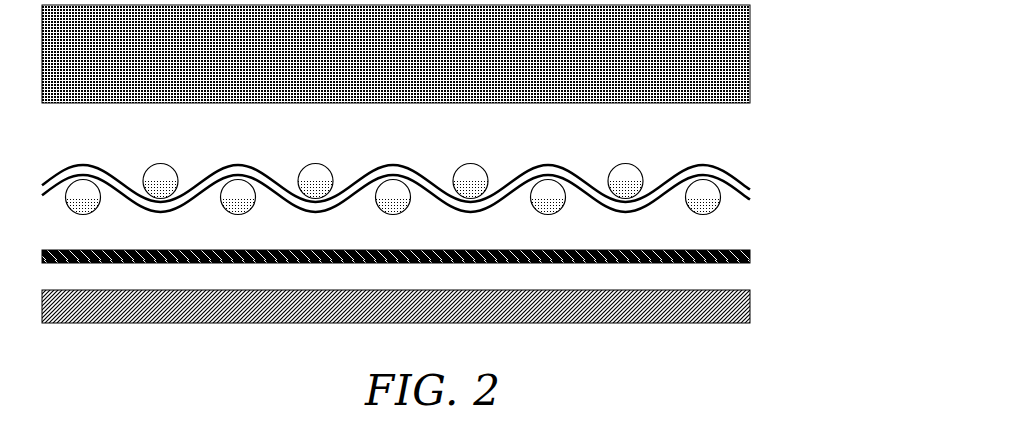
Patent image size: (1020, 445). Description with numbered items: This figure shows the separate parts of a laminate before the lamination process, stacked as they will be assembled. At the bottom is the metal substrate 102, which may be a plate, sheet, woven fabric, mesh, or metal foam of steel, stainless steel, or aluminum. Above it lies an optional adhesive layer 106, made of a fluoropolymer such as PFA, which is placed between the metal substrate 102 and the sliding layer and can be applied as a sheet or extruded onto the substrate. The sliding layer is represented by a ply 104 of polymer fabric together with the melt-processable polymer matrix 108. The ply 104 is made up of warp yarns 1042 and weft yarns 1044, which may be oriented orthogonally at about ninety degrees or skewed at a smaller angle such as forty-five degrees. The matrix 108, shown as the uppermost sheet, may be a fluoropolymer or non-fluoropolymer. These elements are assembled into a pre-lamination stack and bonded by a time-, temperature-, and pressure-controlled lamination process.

The melt-processable polymer matrix 108 is at (738, 63).
The ply of polymer fabric 104 is at (469, 178).
The warp yarns 1042 is at (748, 182).
The weft yarns 1044 is at (713, 200).
The adhesive layer 106 is at (750, 253).
The metal substrate 102 is at (750, 293).